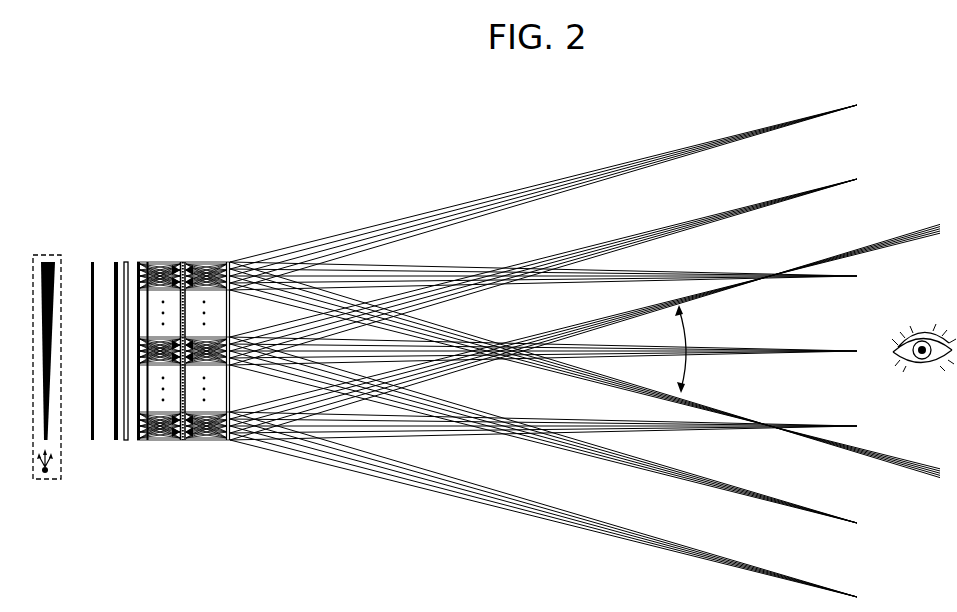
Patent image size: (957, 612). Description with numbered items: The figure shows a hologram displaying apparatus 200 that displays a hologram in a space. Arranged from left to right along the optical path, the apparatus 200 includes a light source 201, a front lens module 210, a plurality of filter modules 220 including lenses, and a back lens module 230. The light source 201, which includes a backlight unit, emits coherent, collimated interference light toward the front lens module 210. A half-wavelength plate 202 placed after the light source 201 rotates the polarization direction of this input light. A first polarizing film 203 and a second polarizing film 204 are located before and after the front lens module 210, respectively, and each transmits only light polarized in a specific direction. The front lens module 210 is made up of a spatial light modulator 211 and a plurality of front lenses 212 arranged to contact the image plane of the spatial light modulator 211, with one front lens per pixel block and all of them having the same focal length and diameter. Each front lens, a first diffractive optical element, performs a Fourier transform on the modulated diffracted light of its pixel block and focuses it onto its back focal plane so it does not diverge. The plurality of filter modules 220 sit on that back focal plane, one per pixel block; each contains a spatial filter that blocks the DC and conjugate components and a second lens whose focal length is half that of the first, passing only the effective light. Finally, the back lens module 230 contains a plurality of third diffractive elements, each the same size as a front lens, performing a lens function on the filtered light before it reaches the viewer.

The hologram displaying apparatus 200 is at (228, 240).
The light source 201 is at (45, 480).
The half-wavelength plate 202 is at (92, 441).
The first polarizing film 203 is at (116, 441).
The second polarizing film 204 is at (148, 441).
The front lens module 210 is at (117, 535).
The spatial light modulator 211 is at (126, 441).
The plurality of front lenses 212 is at (139, 441).
The plurality of filter modules 220 is at (182, 441).
The back lens module 230 is at (227, 441).